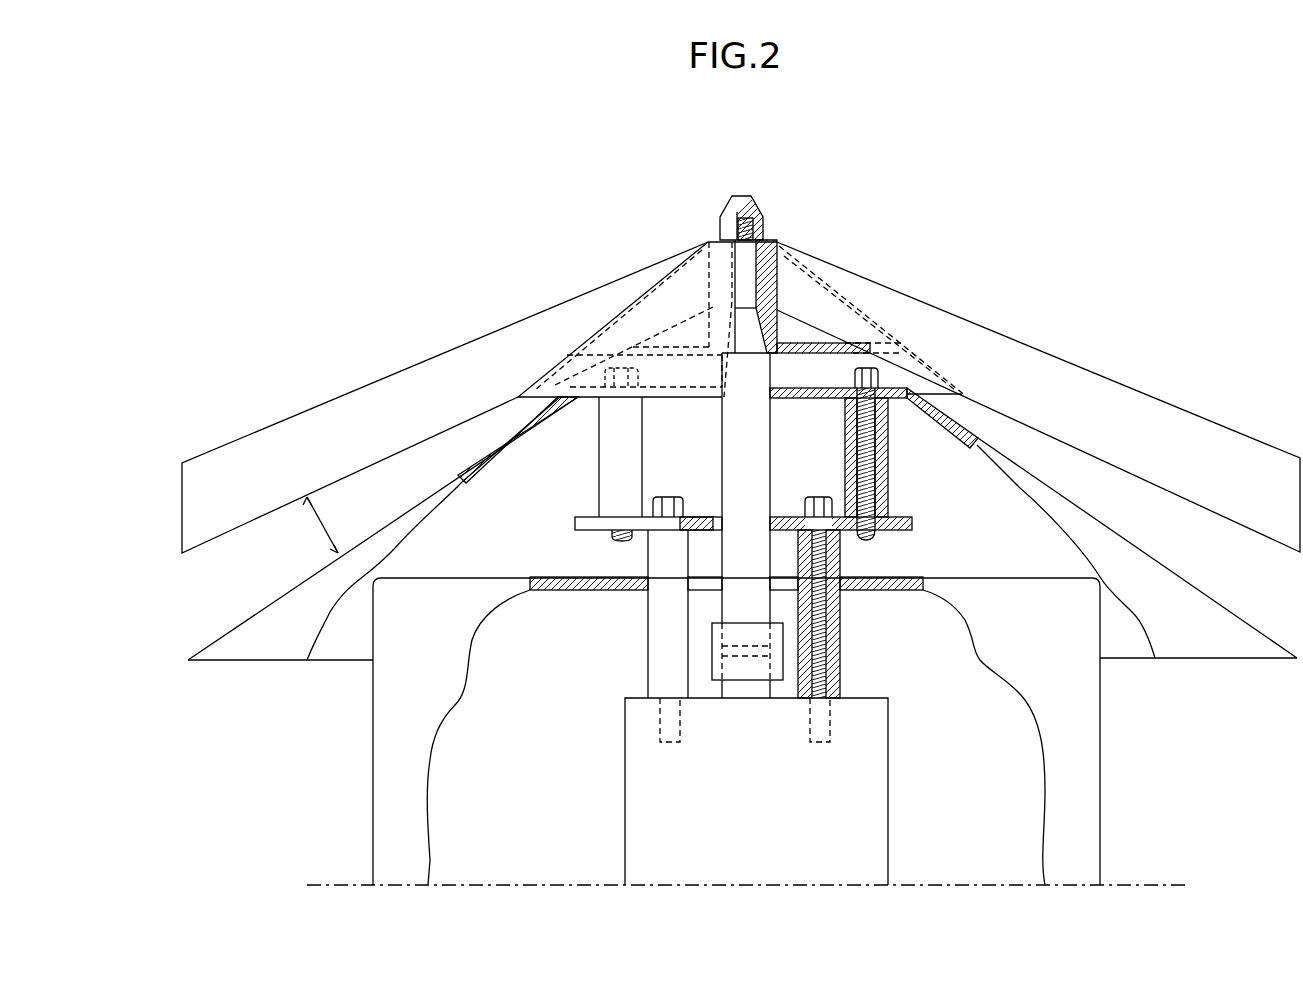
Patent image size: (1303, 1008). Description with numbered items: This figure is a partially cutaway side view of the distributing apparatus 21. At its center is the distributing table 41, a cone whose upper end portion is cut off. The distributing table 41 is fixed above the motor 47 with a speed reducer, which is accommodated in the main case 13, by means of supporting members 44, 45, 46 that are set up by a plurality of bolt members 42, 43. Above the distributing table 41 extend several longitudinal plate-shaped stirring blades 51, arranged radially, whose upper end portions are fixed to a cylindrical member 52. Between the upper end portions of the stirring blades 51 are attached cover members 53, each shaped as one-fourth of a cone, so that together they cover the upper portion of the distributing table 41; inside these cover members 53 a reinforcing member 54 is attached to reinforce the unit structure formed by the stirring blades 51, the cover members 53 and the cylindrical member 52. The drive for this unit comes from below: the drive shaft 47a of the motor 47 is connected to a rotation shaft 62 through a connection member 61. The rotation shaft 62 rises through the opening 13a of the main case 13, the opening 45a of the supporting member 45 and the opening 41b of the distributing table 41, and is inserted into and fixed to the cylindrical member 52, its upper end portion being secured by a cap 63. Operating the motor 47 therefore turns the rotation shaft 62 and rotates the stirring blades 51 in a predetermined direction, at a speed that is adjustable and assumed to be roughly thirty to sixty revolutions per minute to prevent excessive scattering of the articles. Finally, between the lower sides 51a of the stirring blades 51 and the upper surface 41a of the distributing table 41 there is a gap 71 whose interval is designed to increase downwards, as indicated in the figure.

The main case 13 is at (373, 720).
The opening of the main case 13a is at (845, 590).
The distributing apparatus 21 is at (741, 376).
The distributing table 41 is at (268, 645).
The upper surface of the distributing table 41a is at (280, 597).
The opening of the distributing table 41b is at (773, 397).
The bolt member 42 is at (852, 378).
The bolt member 43 is at (662, 497).
The supporting member 44 is at (599, 458).
The supporting member 45 is at (587, 515).
The opening of the supporting member 45a is at (773, 515).
The supporting member 46 is at (650, 668).
The motor with a speed reducer 47 is at (888, 812).
The drive shaft 47a is at (743, 690).
The stirring blade 51 is at (290, 440).
The lower side of the stirring blade 51a is at (268, 515).
The cylindrical member 52 is at (773, 238).
The cover member 53 is at (633, 307).
The reinforcing member 54 is at (805, 350).
The connection member 61 is at (775, 658).
The rotation shaft 62 is at (720, 467).
The cap 63 is at (748, 210).
The gap 71 is at (722, 516).